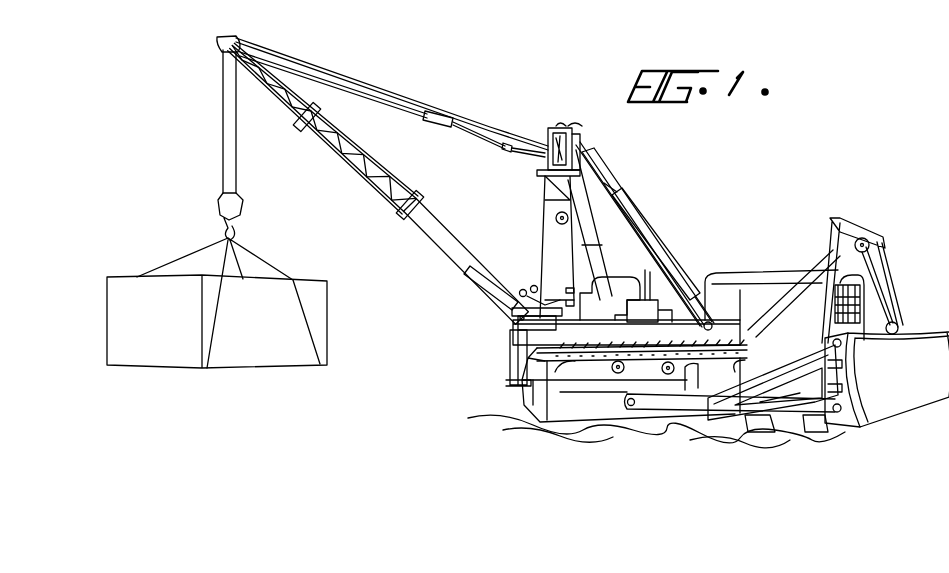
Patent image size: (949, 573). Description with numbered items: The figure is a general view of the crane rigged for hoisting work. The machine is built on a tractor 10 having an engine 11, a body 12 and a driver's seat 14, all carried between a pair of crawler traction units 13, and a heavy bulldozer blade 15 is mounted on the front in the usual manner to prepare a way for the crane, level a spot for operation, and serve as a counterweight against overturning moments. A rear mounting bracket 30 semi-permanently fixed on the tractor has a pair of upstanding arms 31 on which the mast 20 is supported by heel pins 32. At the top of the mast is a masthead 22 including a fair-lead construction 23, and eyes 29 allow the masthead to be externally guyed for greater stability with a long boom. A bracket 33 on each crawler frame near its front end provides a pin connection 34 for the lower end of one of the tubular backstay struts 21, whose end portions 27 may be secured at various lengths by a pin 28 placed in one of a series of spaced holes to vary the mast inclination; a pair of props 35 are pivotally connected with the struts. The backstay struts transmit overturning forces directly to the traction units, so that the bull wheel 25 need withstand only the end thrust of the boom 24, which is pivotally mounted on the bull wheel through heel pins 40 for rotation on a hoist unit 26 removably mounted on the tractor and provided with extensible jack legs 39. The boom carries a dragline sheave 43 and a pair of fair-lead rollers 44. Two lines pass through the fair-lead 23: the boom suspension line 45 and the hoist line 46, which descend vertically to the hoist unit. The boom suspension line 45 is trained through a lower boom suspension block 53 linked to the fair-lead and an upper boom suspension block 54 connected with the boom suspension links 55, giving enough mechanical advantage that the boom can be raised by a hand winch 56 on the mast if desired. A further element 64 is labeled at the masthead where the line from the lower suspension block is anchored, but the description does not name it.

The tractor 10 is at (719, 240).
The engine 11 is at (772, 270).
The body 12 is at (666, 320).
The crawler traction units 13 is at (760, 425).
The driver's seat 14 is at (614, 286).
The bulldozer blade 15 is at (921, 407).
The mast 20 is at (548, 232).
The tubular backstay struts 21 is at (628, 192).
The masthead 22 is at (573, 150).
The fair-lead construction 23 is at (548, 140).
The boom 24 is at (377, 166).
The bull wheel 25 is at (504, 318).
The hoist unit 26 is at (500, 352).
The end portions 27 is at (600, 179).
The pin 28 is at (610, 186).
The eyes 29 is at (586, 128).
The rear mounting bracket 30 is at (572, 321).
The upstanding arms 31 is at (568, 302).
The heel pins 32 is at (568, 290).
The bracket 33 is at (724, 333).
The pin connection 34 is at (710, 321).
The props 35 is at (656, 236).
The extensible jack legs 39 is at (514, 388).
The heel pins 40 is at (512, 309).
The dragline sheave 43 is at (538, 272).
The fair-lead rollers 44 is at (480, 283).
The boom suspension line 45 is at (478, 128).
The hoist line 46 is at (365, 82).
The lower boom suspension block 53 is at (511, 149).
The upper boom suspension block 54 is at (436, 124).
The boom suspension links 55 is at (384, 102).
The hand winch 56 is at (556, 216).
The anchor 64 is at (528, 160).